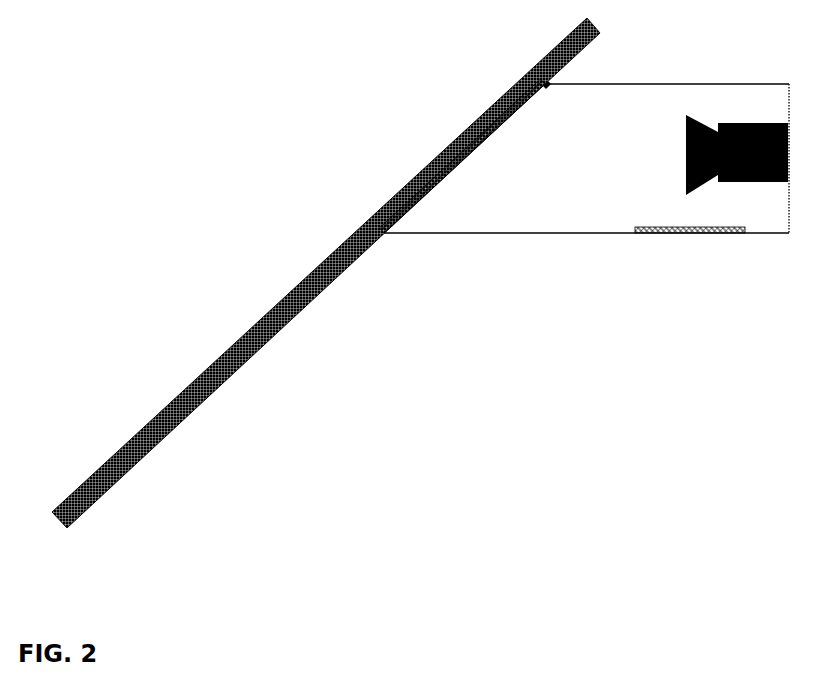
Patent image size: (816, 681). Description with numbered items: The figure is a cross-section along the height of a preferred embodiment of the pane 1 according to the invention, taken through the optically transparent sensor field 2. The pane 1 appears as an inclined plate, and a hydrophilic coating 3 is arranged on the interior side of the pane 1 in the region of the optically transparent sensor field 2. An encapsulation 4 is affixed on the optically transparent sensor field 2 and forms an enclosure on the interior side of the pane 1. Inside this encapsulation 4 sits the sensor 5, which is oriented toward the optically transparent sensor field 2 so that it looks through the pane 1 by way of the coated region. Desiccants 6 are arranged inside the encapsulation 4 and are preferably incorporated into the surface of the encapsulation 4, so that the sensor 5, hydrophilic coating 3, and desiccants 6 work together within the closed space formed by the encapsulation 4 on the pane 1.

The pane 1 is at (330, 232).
The optically transparent sensor field 2 is at (490, 127).
The hydrophilic coating 3 is at (542, 100).
The encapsulation 4 is at (459, 240).
The sensor 5 is at (757, 114).
The desiccants 6 is at (645, 235).